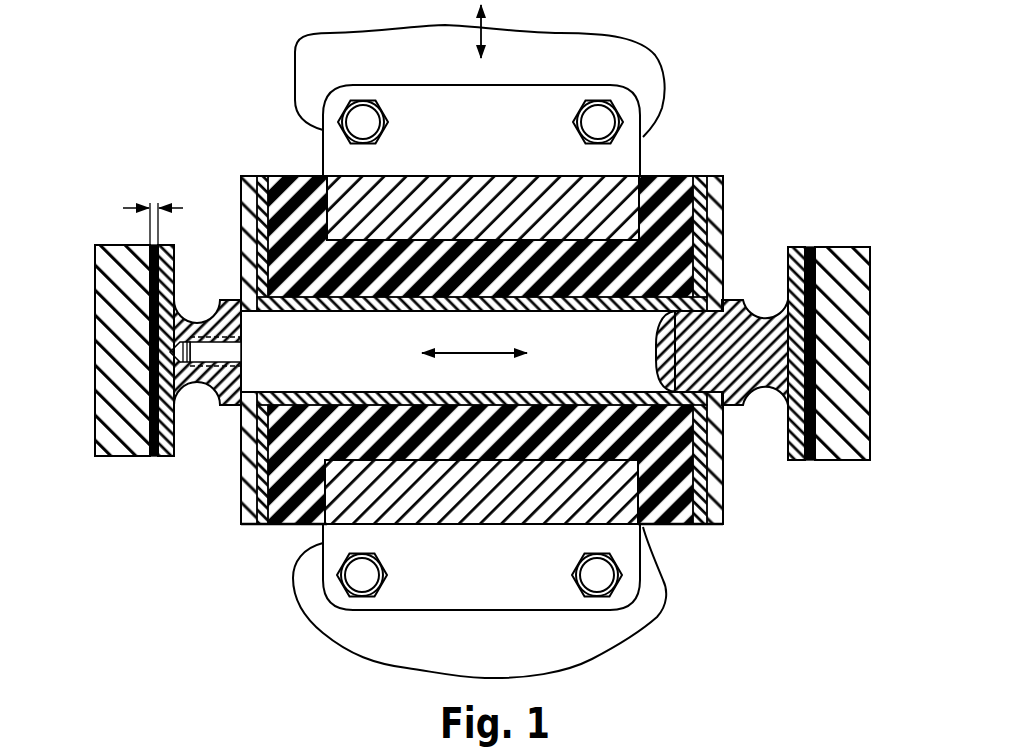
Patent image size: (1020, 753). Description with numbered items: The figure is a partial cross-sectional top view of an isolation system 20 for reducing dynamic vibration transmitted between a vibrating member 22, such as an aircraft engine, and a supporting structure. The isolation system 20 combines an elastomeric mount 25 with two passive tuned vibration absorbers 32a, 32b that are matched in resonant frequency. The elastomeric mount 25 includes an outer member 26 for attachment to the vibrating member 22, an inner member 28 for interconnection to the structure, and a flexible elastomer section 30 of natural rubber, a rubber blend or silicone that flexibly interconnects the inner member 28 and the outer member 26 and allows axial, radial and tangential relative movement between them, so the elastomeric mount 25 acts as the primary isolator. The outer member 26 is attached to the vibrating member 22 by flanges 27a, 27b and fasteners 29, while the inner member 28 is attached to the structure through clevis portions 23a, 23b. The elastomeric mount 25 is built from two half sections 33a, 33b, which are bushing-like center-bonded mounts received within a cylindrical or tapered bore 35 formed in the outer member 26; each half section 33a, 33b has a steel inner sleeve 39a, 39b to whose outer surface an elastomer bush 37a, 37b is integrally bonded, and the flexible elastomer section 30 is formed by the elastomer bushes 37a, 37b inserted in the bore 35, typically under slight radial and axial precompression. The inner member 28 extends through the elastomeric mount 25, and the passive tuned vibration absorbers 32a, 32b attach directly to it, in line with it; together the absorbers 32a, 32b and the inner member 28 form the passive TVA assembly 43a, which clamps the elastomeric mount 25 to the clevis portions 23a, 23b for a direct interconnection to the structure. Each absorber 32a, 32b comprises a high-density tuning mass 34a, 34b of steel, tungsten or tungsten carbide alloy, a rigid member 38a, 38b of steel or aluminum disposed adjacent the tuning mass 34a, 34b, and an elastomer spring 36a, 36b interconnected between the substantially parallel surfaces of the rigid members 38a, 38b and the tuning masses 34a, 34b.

The isolation system 20 is at (482, 345).
The vibrating member 22 is at (479, 339).
The clevis portion 23a is at (240, 492).
The clevis portion 23b is at (723, 203).
The elastomeric mount 25 is at (680, 167).
The outer member 26 is at (482, 350).
The flange 27a is at (481, 131).
The flange 27b is at (481, 566).
The inner member 28 is at (458, 351).
The fasteners 29 is at (385, 110).
The flexible elastomer section 30 is at (280, 167).
The passive tuned vibration absorber 32a is at (142, 335).
The passive tuned vibration absorber 32b is at (852, 362).
The half section 33a is at (307, 162).
The half section 33b is at (705, 167).
The tuning mass 34a is at (108, 458).
The tuning mass 34b is at (843, 460).
The bore 35 is at (645, 523).
The spring 36a is at (148, 458).
The spring 36b is at (810, 460).
The elastomer bush 37a is at (293, 527).
The elastomer bush 37b is at (692, 523).
The rigid member 38a is at (167, 427).
The rigid member 38b is at (800, 247).
The inner sleeve 39a is at (265, 176).
The inner sleeve 39b is at (700, 473).
The passive TVA assembly 43a is at (217, 258).